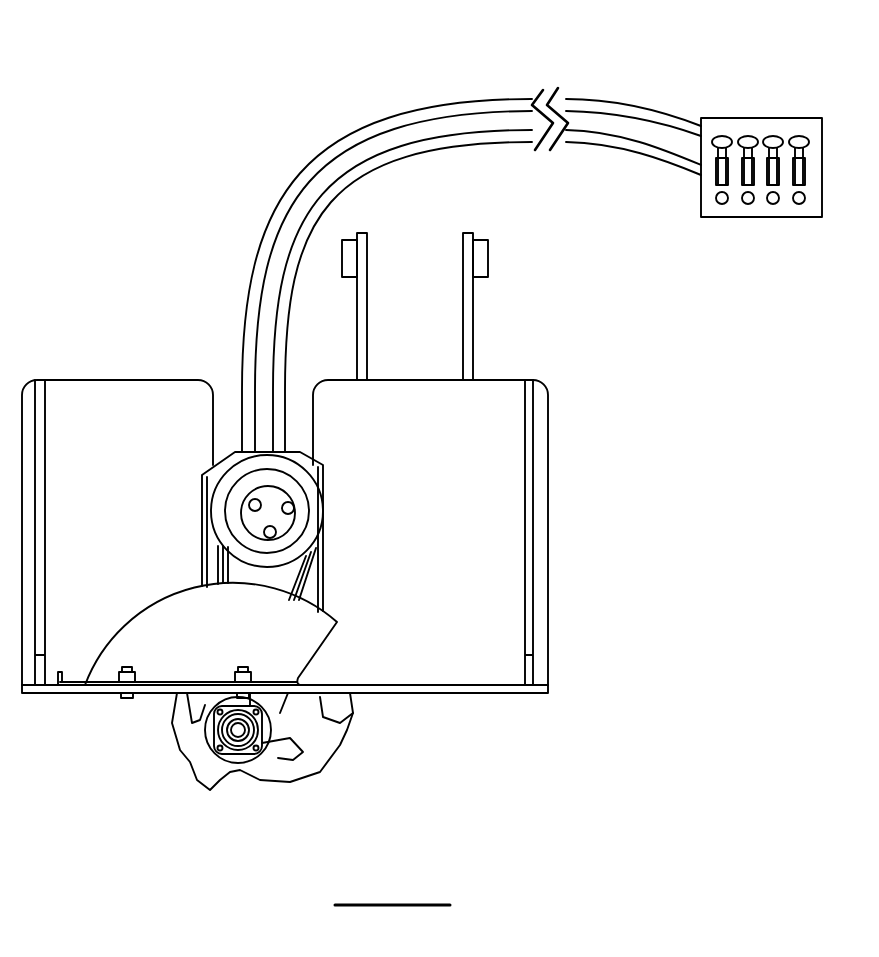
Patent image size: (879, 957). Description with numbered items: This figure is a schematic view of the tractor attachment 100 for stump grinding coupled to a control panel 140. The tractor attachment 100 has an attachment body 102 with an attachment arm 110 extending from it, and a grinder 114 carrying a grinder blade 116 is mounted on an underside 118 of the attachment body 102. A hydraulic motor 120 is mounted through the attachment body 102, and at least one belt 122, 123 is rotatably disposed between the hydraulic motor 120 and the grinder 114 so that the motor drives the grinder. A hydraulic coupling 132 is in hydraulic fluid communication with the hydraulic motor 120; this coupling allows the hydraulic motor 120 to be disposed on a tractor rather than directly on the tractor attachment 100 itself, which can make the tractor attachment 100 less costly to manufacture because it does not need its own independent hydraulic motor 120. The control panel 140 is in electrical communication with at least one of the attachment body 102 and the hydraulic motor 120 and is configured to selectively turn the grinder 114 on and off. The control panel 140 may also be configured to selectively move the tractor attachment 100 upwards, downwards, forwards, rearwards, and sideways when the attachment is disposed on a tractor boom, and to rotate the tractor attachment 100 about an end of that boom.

The tractor attachment 100 is at (138, 150).
The attachment body 102 is at (552, 458).
The attachment arm 110 is at (365, 299).
The grinder 114 is at (213, 745).
The grinder blade 116 is at (200, 782).
The underside 118 is at (52, 700).
The hydraulic motor 120 is at (255, 492).
The belt 122 is at (300, 563).
The belt 123 is at (310, 582).
The hydraulic coupling 132 is at (411, 114).
The control panel 140 is at (769, 118).